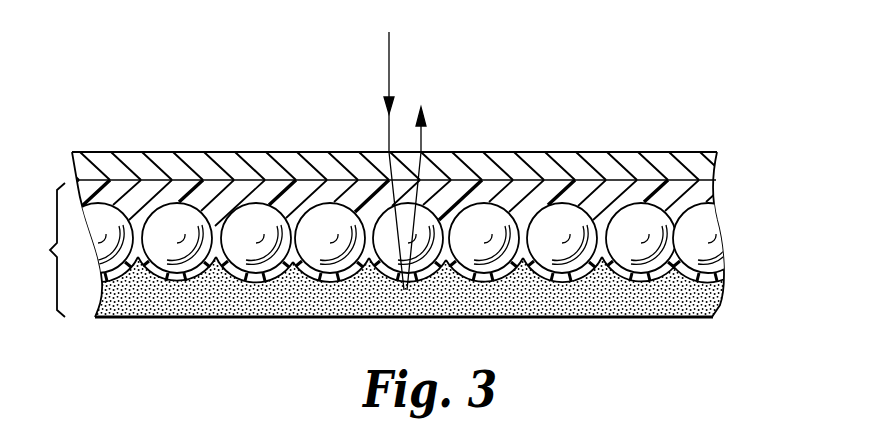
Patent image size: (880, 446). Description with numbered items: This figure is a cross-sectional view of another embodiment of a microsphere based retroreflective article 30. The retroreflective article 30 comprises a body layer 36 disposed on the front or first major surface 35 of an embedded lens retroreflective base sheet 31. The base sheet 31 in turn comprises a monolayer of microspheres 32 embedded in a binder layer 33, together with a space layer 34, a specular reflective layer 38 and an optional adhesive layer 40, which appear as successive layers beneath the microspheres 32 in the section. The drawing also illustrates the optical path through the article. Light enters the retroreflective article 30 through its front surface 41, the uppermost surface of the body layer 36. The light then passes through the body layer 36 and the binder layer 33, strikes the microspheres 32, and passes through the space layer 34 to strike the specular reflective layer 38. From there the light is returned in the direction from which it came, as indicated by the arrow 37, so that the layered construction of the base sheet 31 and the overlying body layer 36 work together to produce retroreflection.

The retroreflective article 30 is at (643, 115).
The embedded lens retroreflective base sheet 31 is at (39, 250).
The microspheres 32 is at (320, 218).
The binder layer 33 is at (700, 193).
The space layer 34 is at (722, 278).
The first major surface 35 is at (492, 178).
The body layer 36 is at (143, 152).
The arrow 37 is at (389, 60).
The specular reflective layer 38 is at (713, 318).
The adhesive layer 40 is at (607, 306).
The front surface 41 is at (566, 152).